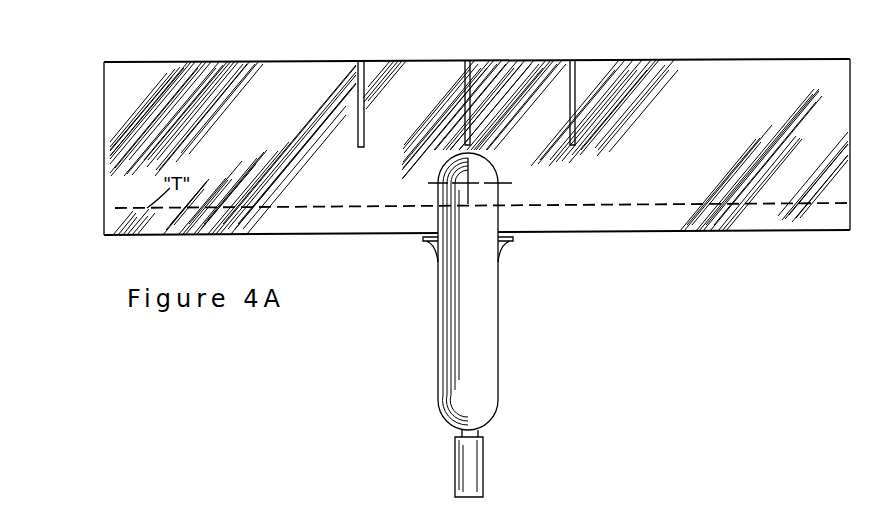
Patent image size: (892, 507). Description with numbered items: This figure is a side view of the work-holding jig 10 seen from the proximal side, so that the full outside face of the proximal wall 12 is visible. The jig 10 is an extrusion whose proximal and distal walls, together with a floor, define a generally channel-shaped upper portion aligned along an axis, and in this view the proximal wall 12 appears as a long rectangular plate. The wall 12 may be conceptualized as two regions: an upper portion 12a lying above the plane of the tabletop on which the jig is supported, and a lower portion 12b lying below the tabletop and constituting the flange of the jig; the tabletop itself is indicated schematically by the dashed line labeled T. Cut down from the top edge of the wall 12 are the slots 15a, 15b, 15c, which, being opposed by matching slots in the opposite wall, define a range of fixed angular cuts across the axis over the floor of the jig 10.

The work-holding jig 10 is at (92, 154).
The proximal wall 12 is at (268, 128).
The upper portion 12a is at (104, 92).
The lower portion 12b is at (124, 221).
The slot 15a is at (582, 88).
The slot 15b is at (480, 88).
The slot 15c is at (361, 76).